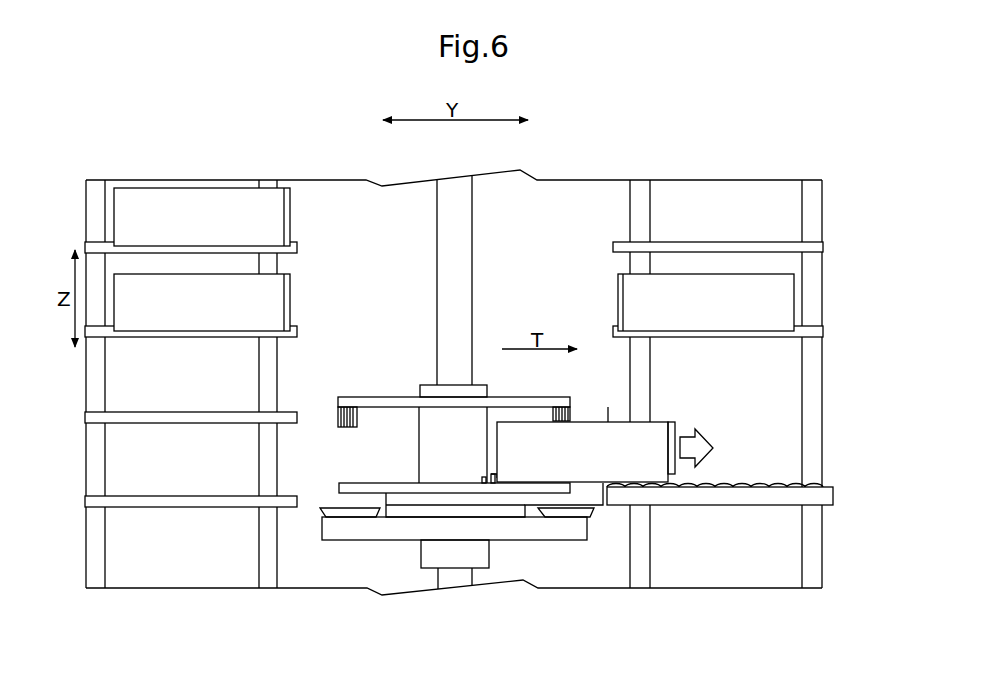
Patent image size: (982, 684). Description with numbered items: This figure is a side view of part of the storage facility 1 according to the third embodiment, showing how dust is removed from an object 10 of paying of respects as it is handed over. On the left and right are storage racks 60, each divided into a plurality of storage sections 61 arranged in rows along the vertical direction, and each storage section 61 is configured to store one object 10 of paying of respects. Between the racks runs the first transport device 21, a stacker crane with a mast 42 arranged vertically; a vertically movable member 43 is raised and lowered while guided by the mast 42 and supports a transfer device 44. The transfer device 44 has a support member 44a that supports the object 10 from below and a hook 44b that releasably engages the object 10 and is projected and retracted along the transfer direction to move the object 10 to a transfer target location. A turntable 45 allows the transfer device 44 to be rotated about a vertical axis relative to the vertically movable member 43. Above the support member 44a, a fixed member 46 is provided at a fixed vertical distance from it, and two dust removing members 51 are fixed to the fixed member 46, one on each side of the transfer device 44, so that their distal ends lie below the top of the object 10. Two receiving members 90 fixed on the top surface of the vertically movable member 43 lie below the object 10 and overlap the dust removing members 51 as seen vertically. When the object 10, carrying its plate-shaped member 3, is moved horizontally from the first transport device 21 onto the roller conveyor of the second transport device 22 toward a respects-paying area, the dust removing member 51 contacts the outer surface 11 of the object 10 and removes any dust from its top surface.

The storage facility 1 is at (832, 162).
The storage rack 60 is at (182, 172).
The storage section 61 is at (128, 380).
The mast 42 is at (463, 243).
The fixed member 46 is at (408, 398).
The dust removing member 51 is at (345, 407).
The support member 44a is at (382, 490).
The hook 44b is at (480, 480).
The transfer device 44 is at (502, 503).
The object of paying of respects 10 is at (600, 476).
The receiving member 90 is at (320, 512).
The vertically movable member 43 is at (352, 532).
The turntable 45 is at (408, 513).
The first transport device 21 is at (410, 570).
The outer surface 11 is at (608, 422).
The plate-shaped member 3 is at (675, 427).
The second transport device 22 is at (765, 495).